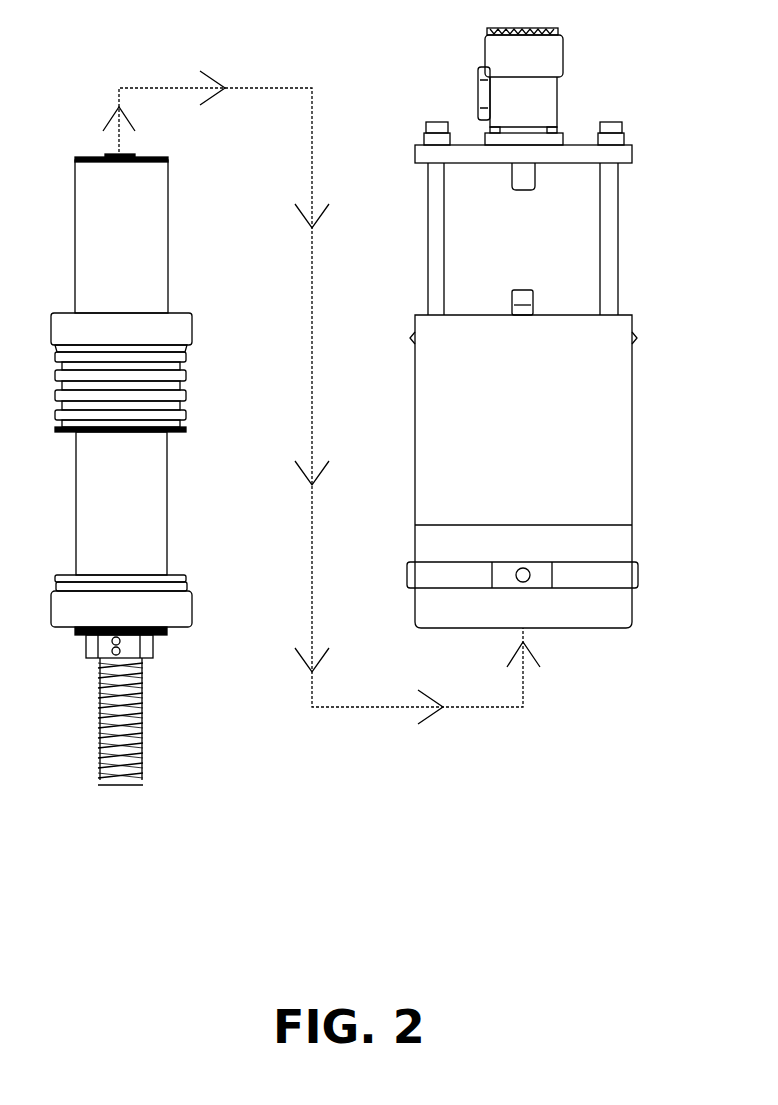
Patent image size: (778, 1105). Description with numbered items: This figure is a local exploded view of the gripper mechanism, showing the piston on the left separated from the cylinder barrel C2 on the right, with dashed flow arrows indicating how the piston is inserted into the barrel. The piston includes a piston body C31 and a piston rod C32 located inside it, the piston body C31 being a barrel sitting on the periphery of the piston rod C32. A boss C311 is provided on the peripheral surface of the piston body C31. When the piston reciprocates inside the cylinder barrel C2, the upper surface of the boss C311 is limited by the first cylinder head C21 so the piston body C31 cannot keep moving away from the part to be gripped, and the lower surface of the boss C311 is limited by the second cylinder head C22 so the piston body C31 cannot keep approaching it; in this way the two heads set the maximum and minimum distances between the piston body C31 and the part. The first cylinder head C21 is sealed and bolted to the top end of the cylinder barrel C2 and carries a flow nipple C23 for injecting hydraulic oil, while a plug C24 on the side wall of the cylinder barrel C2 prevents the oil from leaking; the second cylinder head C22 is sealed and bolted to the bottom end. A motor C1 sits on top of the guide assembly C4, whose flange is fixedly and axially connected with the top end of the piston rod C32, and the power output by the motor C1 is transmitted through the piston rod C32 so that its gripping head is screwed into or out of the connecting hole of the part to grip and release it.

The motor C1 is at (527, 120).
The cylinder barrel C2 is at (450, 437).
The guide assembly C4 is at (438, 212).
The first cylinder head C21 is at (160, 330).
The second cylinder head C22 is at (150, 612).
The flow nipple C23 is at (520, 300).
The plug C24 is at (523, 575).
The piston body C31 is at (136, 250).
The boss C311 is at (148, 407).
The piston rod C32 is at (140, 705).